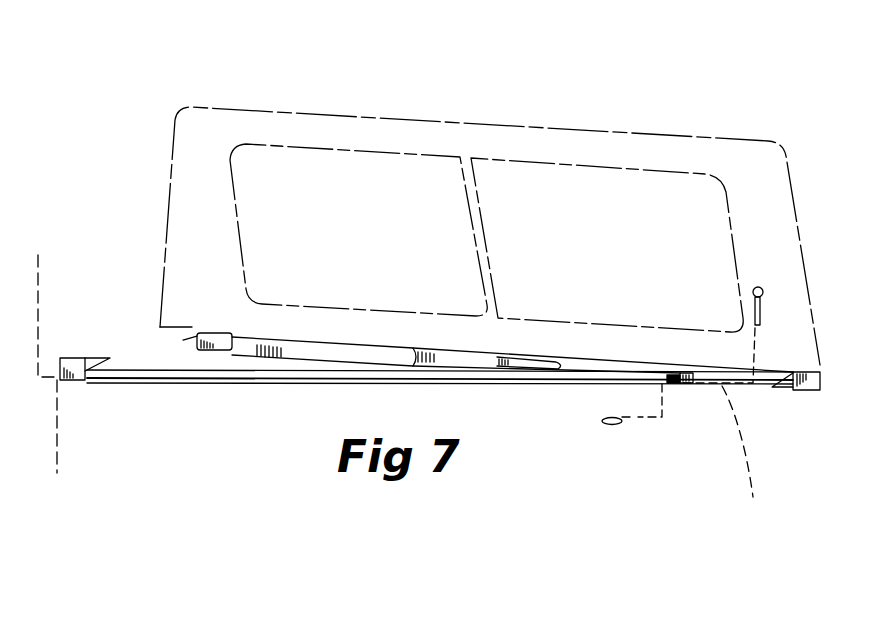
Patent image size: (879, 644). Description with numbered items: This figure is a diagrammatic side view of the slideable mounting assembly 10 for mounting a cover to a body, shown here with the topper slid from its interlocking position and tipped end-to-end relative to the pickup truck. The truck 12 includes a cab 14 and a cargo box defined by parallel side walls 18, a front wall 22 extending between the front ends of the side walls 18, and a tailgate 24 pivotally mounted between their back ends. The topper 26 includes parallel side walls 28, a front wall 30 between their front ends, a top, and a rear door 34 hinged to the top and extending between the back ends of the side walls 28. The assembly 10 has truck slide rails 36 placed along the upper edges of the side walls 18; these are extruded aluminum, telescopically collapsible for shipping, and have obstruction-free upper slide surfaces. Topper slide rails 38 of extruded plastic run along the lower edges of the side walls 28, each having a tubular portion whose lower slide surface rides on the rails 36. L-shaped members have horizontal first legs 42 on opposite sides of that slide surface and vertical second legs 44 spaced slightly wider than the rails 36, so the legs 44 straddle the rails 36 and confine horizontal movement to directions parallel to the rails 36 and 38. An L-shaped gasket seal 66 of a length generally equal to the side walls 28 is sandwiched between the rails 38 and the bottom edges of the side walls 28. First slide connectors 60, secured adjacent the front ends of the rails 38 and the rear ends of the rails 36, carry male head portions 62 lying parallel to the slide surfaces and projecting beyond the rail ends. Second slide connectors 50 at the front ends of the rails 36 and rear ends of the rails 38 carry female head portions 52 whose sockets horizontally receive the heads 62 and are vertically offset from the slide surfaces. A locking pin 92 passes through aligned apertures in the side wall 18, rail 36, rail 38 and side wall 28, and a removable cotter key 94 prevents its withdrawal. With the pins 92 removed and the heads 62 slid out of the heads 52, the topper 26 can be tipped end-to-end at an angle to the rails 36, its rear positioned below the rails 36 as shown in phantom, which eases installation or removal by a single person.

The slideable mounting assembly 10 is at (4, 104).
The truck 12 is at (42, 288).
The cab 14 is at (40, 296).
The side walls 18 is at (718, 480).
The front wall 22 is at (57, 412).
The tailgate 24 is at (753, 497).
The topper 26 is at (495, 121).
The side walls 28 is at (216, 266).
The front wall 30 is at (172, 135).
The rear door 34 is at (803, 213).
The truck slide rails 36 is at (242, 384).
The topper slide rails 38 is at (225, 330).
The first legs 42 is at (445, 356).
The second legs 44 is at (514, 363).
The second slide connectors 50 is at (67, 357).
The female head portion 52 is at (85, 358).
The first slide connectors 60 is at (182, 341).
The male head portion 62 is at (186, 342).
The L-shaped gasket seal 66 is at (317, 323).
The locking pin 92 is at (762, 296).
The cotter key 94 is at (613, 426).